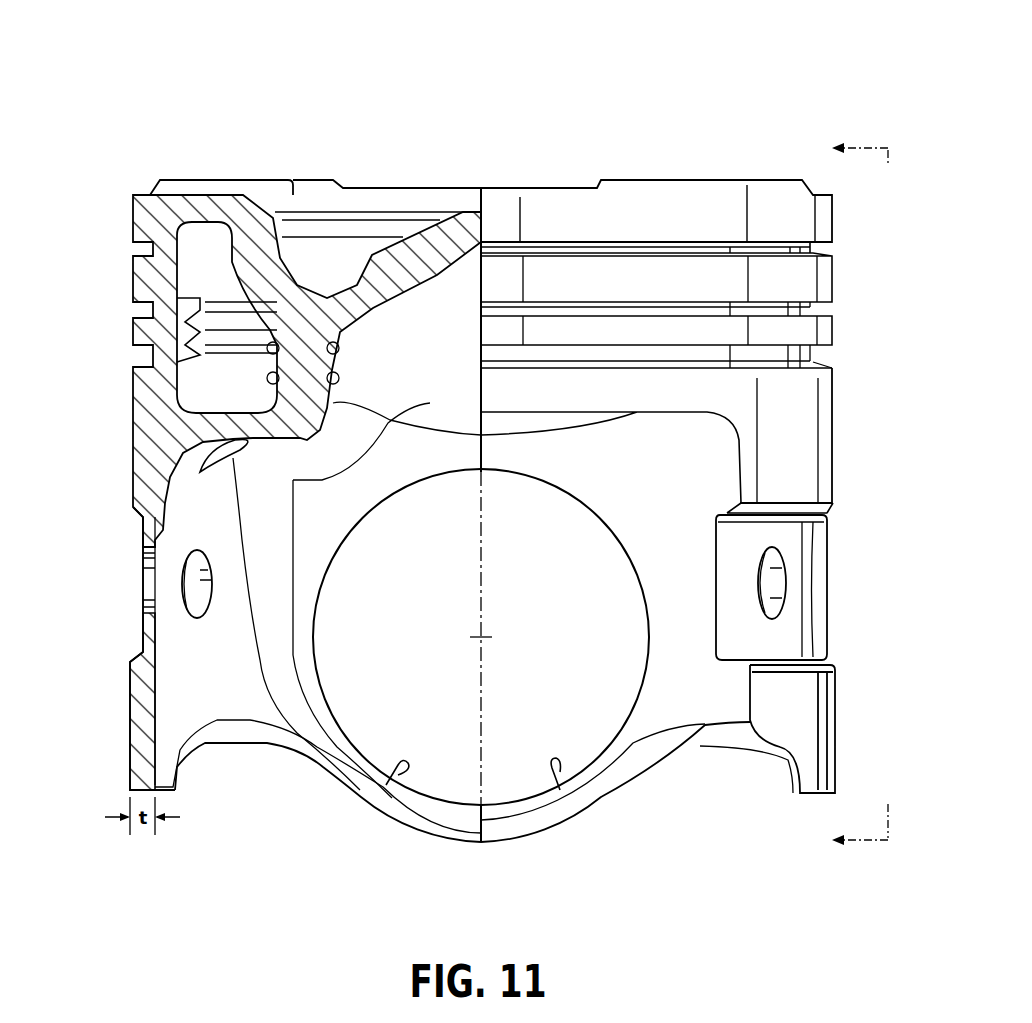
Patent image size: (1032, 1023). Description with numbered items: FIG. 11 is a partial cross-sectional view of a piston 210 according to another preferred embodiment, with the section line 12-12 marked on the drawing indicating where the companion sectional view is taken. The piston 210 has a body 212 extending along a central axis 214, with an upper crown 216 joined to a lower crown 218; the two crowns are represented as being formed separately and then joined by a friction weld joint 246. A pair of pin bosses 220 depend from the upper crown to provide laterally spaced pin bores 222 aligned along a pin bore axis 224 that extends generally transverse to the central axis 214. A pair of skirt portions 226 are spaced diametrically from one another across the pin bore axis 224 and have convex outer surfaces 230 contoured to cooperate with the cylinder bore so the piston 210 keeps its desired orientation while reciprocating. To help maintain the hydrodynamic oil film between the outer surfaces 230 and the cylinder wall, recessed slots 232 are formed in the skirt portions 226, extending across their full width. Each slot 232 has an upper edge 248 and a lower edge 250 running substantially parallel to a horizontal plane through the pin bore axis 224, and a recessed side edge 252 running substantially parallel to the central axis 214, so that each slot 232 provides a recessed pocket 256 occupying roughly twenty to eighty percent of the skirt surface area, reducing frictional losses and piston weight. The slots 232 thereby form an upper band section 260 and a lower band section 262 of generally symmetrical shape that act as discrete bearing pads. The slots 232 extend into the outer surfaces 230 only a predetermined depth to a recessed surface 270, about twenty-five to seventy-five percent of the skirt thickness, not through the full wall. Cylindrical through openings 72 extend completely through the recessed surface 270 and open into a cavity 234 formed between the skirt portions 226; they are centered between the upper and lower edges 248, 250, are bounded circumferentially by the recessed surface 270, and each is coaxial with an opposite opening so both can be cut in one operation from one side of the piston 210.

The piston 210 is at (708, 124).
The body 212 is at (160, 193).
The central axis 214 is at (482, 718).
The upper crown 216 is at (107, 197).
The lower crown 218 is at (132, 388).
The pin bosses 220 is at (440, 838).
The pin bores 222 is at (393, 772).
The pin bore axis 224 is at (482, 632).
The skirt portions 226 is at (133, 718).
The convex outer surfaces 230 is at (133, 458).
The recessed slots 232 is at (143, 596).
The cavity 234 is at (280, 668).
The friction weld joint 246 is at (197, 333).
The upper edge 248 is at (133, 507).
The lower edge 250 is at (131, 660).
The recessed side edge 252 is at (716, 590).
The recessed pocket 256 is at (133, 629).
The upper band section 260 is at (805, 423).
The lower band section 262 is at (808, 713).
The recessed surface 270 is at (143, 552).
The through openings 72 is at (200, 597).
The section line 12- 12 is at (860, 493).